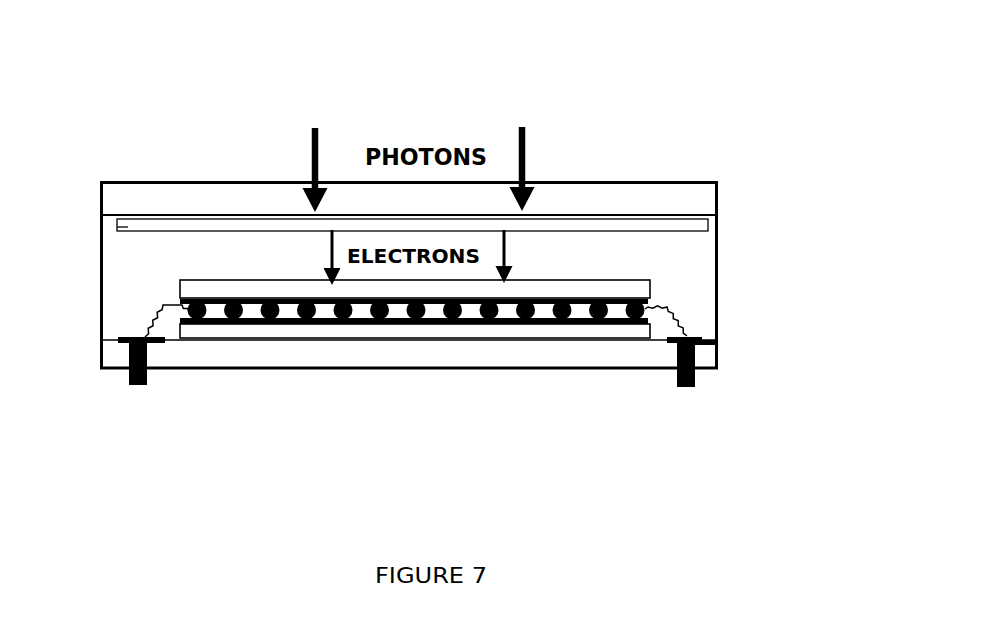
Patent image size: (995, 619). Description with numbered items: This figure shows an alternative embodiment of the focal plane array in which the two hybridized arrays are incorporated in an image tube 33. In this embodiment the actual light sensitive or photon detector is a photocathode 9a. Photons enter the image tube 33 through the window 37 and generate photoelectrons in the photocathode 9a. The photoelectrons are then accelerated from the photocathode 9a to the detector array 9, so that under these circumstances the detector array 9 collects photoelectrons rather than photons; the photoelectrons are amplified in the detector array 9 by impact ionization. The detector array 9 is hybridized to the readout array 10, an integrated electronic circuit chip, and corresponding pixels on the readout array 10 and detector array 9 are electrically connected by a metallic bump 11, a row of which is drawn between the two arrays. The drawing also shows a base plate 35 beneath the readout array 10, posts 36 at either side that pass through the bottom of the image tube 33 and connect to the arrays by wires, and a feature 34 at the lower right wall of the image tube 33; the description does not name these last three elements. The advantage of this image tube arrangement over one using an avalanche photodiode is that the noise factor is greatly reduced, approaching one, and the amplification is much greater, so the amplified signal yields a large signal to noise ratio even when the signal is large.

The image tube 33 is at (712, 59).
The window 37 is at (667, 186).
The photocathode 9a is at (117, 228).
The detector array 9 is at (600, 272).
The metallic bump 11 is at (622, 297).
The readout array 10 is at (398, 330).
The base plate 35 is at (100, 343).
The feedthrough pins with wire bonds 36 is at (123, 306).
The housing bottom seal 34 is at (725, 338).